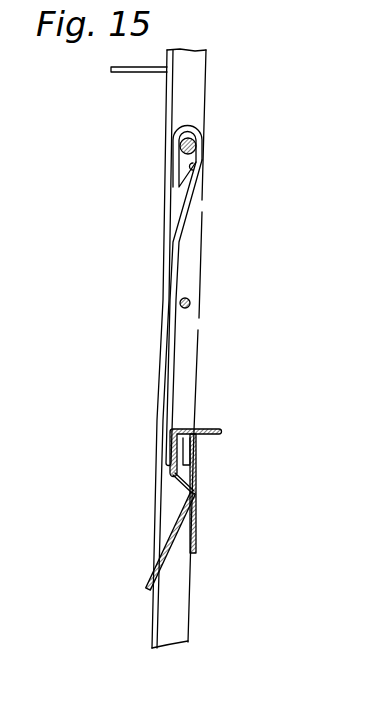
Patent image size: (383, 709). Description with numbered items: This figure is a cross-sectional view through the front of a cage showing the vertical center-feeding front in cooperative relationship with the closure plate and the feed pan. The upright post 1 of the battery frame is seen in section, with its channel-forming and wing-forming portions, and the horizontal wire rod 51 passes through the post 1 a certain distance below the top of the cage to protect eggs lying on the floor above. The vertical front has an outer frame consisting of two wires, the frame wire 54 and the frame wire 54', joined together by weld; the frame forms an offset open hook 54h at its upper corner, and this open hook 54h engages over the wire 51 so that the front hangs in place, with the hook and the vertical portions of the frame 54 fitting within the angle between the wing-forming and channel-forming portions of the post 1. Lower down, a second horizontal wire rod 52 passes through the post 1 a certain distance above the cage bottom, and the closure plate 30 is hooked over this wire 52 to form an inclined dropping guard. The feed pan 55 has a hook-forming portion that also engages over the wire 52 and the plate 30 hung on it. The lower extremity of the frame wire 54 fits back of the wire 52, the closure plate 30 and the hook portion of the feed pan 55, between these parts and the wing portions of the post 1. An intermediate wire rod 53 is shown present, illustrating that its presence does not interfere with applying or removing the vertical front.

The post 1 is at (199, 83).
The frame wire 54 is at (211, 313).
The frame wire 54' is at (212, 151).
The horizontal wire rod 51 is at (195, 147).
The offset open hook 54h is at (192, 170).
The wire rod 53 is at (190, 302).
The feed pan 55 is at (222, 436).
The wire rod 52 is at (187, 452).
The closure plate 30 is at (177, 531).